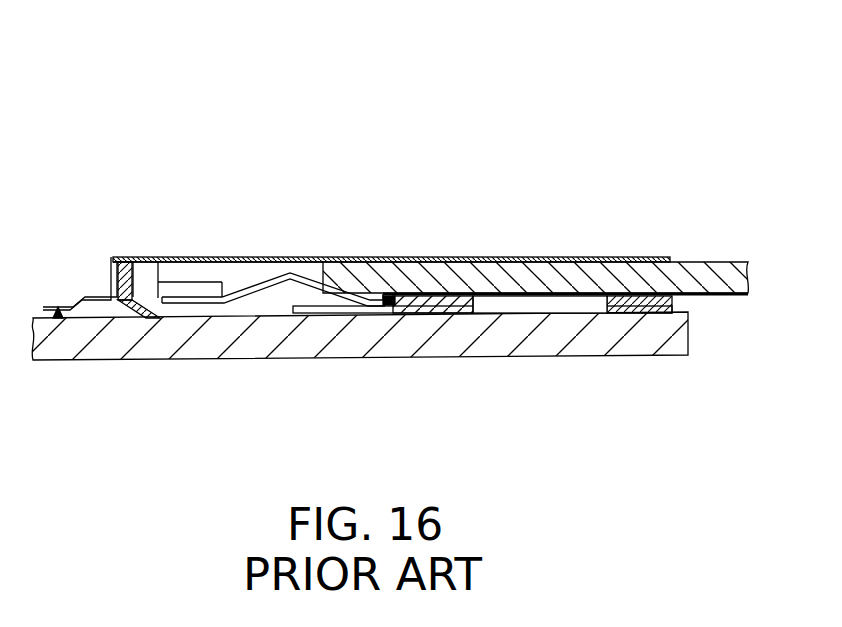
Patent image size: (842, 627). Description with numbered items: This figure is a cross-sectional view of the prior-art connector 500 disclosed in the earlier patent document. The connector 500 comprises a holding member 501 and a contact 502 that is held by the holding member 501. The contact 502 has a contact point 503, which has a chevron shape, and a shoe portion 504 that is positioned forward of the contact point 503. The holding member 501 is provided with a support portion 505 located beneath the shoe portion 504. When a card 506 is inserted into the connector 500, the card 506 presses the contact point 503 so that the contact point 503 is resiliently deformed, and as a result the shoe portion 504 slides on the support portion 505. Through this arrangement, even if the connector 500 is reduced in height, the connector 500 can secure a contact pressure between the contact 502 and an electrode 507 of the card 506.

The connector 500 is at (388, 190).
The holding member 501 is at (125, 316).
The contact 502 is at (222, 290).
The contact point 503 is at (303, 268).
The shoe portion 504 is at (400, 297).
The support portion 505 is at (340, 314).
The card 506 is at (647, 278).
The electrode 507 is at (443, 298).